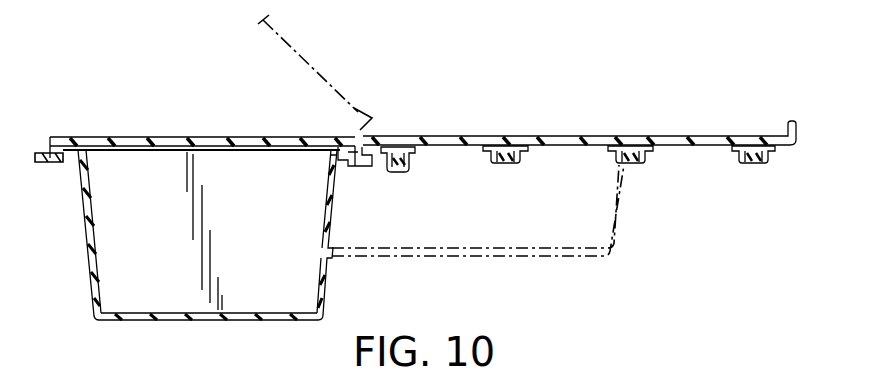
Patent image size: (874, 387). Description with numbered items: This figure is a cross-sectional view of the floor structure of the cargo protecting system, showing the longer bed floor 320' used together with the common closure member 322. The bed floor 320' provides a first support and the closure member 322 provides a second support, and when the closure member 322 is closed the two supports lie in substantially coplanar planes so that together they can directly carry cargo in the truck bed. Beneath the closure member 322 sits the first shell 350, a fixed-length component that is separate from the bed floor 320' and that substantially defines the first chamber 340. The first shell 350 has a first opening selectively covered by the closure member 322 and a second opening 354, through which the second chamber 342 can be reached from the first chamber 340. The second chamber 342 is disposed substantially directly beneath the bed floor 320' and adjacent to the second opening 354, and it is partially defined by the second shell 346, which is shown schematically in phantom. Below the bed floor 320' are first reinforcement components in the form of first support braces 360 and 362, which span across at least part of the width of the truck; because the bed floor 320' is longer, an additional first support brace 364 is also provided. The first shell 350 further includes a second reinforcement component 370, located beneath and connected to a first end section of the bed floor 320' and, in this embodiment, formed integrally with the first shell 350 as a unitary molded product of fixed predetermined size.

The closure member 322 is at (195, 130).
The bed floor 320' is at (579, 102).
The first chamber 340 is at (184, 200).
The second opening 354 is at (329, 178).
The second chamber 342 is at (335, 219).
The first shell 350 is at (80, 234).
The second reinforcement component 370 is at (402, 174).
The first support brace 362 is at (510, 164).
The first support brace 360 is at (626, 165).
The additional first support brace 364 is at (757, 165).
The second shell 346 is at (509, 262).